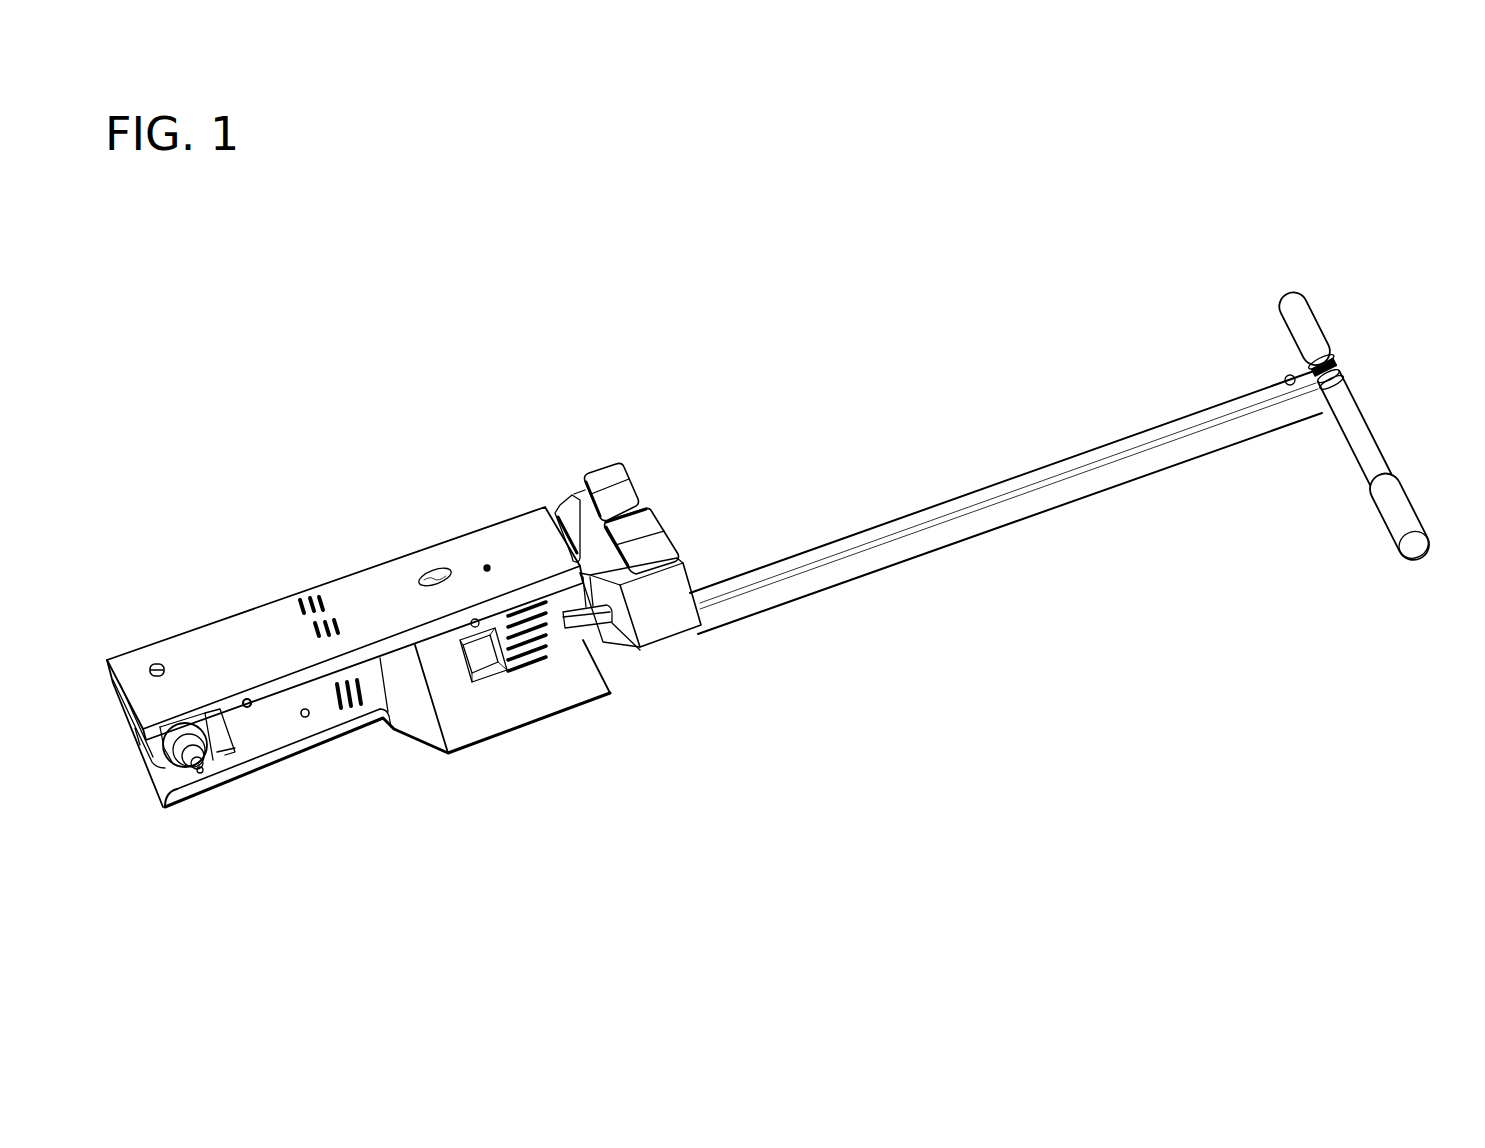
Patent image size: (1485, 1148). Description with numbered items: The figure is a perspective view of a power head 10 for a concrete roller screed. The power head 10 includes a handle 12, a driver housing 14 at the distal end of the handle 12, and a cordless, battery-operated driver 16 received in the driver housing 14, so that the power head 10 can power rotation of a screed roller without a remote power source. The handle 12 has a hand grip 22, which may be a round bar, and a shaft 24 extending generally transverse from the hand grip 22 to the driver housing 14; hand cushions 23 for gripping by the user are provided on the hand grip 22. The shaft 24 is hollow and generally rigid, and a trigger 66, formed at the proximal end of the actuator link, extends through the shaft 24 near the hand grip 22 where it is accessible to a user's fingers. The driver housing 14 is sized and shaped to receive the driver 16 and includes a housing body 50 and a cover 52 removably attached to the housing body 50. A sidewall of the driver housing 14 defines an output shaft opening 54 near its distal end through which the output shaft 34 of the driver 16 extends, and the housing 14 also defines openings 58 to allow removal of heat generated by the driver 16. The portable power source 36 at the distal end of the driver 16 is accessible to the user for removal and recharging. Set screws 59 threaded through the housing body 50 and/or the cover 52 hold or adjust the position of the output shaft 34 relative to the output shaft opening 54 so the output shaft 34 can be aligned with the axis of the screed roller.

The power head 10 is at (716, 268).
The handle 12 is at (941, 496).
The driver housing 14 is at (495, 749).
The cordless driver 16 is at (546, 482).
The hand grip 22 is at (1355, 425).
The hand cushions 23 is at (1306, 323).
The shaft 24 is at (1033, 503).
The output shaft 34 is at (203, 773).
The portable power source 36 is at (662, 520).
The housing body 50 is at (598, 690).
The cover 52 is at (380, 583).
The output shaft opening 54 is at (180, 808).
The openings 58 is at (298, 607).
The set screws 59 is at (157, 664).
The trigger 66 is at (1286, 374).